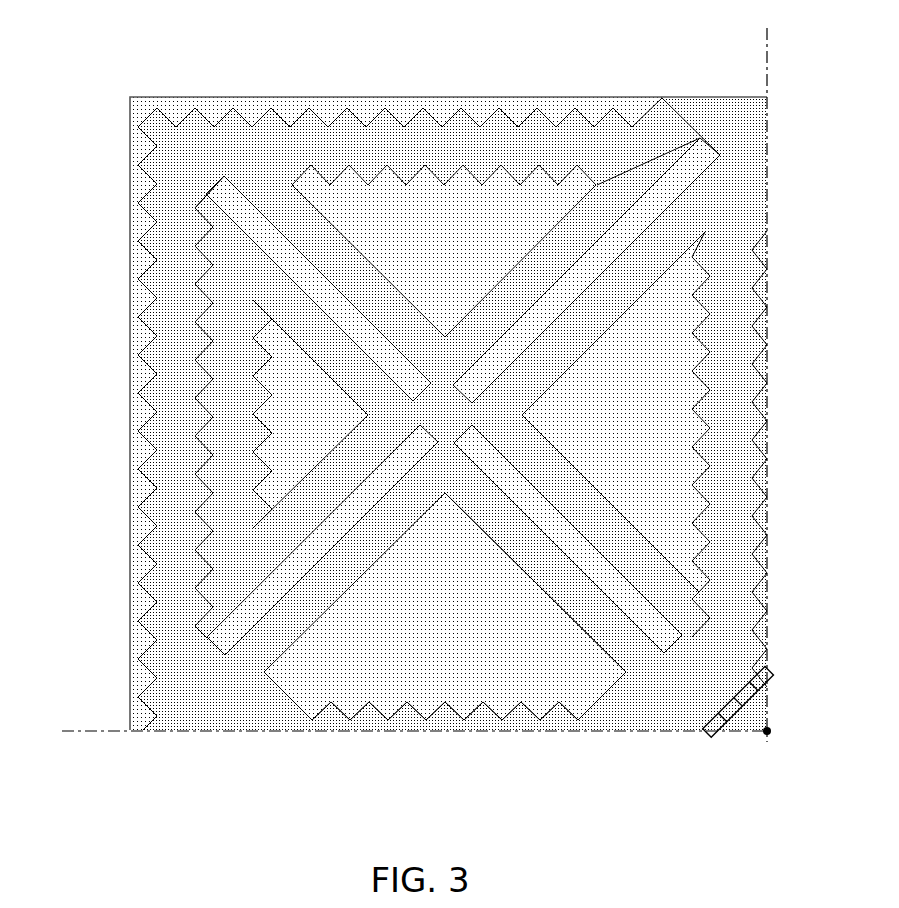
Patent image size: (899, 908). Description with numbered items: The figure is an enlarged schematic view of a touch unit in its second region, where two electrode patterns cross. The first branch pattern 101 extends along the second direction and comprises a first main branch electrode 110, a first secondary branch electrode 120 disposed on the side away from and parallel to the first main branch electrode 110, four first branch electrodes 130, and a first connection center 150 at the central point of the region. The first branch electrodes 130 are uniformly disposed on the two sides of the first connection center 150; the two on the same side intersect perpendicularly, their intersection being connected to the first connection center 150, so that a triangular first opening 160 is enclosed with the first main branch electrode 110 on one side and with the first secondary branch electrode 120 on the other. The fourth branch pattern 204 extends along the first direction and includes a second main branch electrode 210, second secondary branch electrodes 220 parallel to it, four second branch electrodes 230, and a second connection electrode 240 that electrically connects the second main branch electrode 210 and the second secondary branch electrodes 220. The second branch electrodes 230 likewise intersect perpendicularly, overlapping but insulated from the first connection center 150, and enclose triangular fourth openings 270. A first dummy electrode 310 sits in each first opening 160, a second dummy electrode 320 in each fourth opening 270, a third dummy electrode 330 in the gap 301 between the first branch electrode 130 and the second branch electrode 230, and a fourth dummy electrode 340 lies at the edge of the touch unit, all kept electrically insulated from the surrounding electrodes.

The first branch pattern 101 is at (737, 140).
The first main branch electrode 110 is at (727, 437).
The first secondary branch electrode 120 is at (230, 375).
The first branch electrode 130 is at (320, 505).
The first connection center 150 is at (463, 222).
The first opening 160 is at (700, 347).
The fourth branch pattern 204 is at (175, 695).
The second main branch electrode 210 is at (333, 706).
The second secondary branch electrode 220 is at (623, 111).
The second branch electrode 230 is at (445, 424).
The second connection electrode 240 is at (178, 523).
The fourth opening 270 is at (538, 757).
The gap 301 is at (147, 126).
The first dummy electrode 310 is at (643, 335).
The second dummy electrode 320 is at (590, 653).
The third dummy electrode 330 is at (233, 200).
The fourth dummy electrode 340 is at (142, 187).